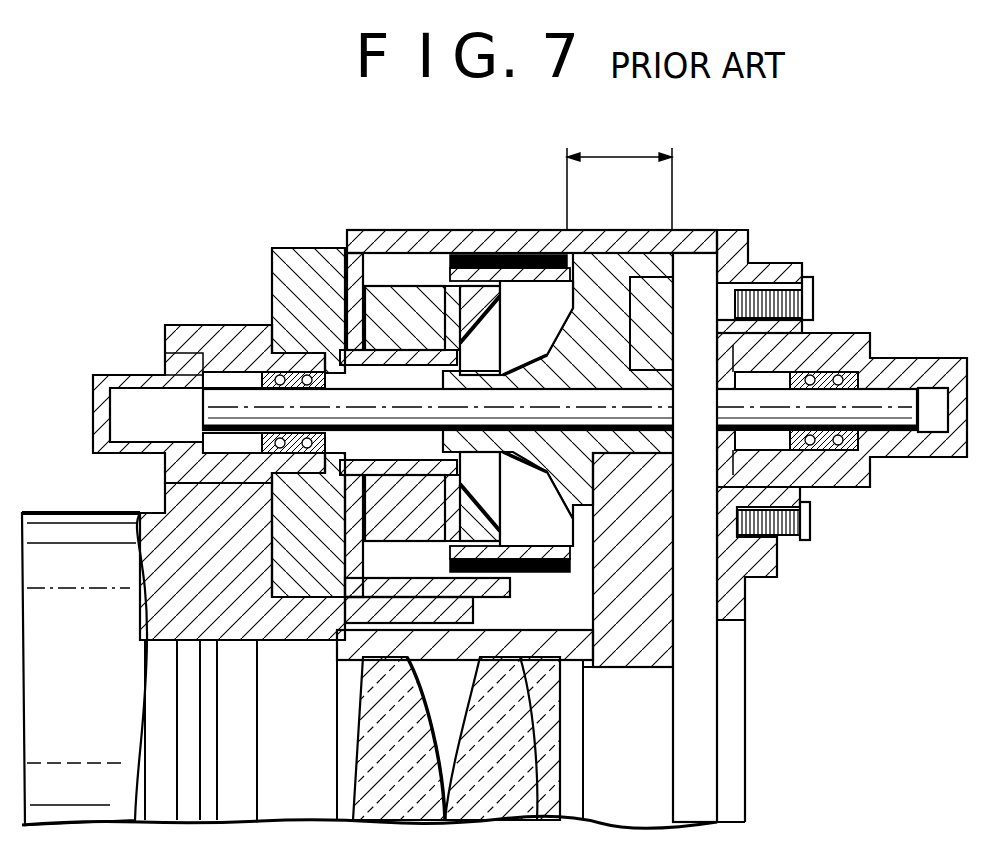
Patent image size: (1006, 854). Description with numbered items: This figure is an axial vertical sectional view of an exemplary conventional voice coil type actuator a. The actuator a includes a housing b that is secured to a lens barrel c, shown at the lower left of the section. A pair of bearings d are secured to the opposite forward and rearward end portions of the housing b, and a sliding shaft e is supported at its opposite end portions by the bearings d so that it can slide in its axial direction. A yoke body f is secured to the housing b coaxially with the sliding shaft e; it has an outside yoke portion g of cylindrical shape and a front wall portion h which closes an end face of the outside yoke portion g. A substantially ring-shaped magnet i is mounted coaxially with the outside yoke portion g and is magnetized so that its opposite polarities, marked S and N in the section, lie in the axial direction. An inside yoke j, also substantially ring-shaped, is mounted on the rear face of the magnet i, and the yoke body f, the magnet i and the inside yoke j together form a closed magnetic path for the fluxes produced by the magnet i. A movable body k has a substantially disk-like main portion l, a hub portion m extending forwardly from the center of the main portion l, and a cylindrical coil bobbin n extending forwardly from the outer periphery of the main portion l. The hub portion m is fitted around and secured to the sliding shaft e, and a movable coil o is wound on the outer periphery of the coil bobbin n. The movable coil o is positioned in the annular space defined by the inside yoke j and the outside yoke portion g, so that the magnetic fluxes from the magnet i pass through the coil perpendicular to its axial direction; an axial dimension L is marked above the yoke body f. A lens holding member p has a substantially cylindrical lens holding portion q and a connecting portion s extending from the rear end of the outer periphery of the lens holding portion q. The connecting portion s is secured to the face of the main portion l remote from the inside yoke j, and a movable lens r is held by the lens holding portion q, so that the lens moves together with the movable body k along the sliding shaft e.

The actuator a is at (197, 242).
The housing b is at (278, 258).
The lens barrel c is at (50, 512).
The bearings d is at (272, 368).
The sliding shaft e is at (900, 400).
The yoke body f is at (358, 230).
The outside yoke portion g is at (490, 230).
The front wall portion h is at (347, 307).
The magnet i is at (402, 333).
The inside yoke j is at (480, 292).
The movable body k is at (693, 250).
The main portion l is at (668, 310).
The hub portion m is at (522, 372).
The coil bobbin n is at (477, 248).
The movable coil o is at (540, 247).
The lens holding member p is at (673, 650).
The lens holding portion q is at (533, 637).
The movable lens r is at (463, 747).
The connecting portion s is at (655, 537).
The length L is at (619, 177).
The south pole S is at (376, 320).
The north pole N is at (432, 320).